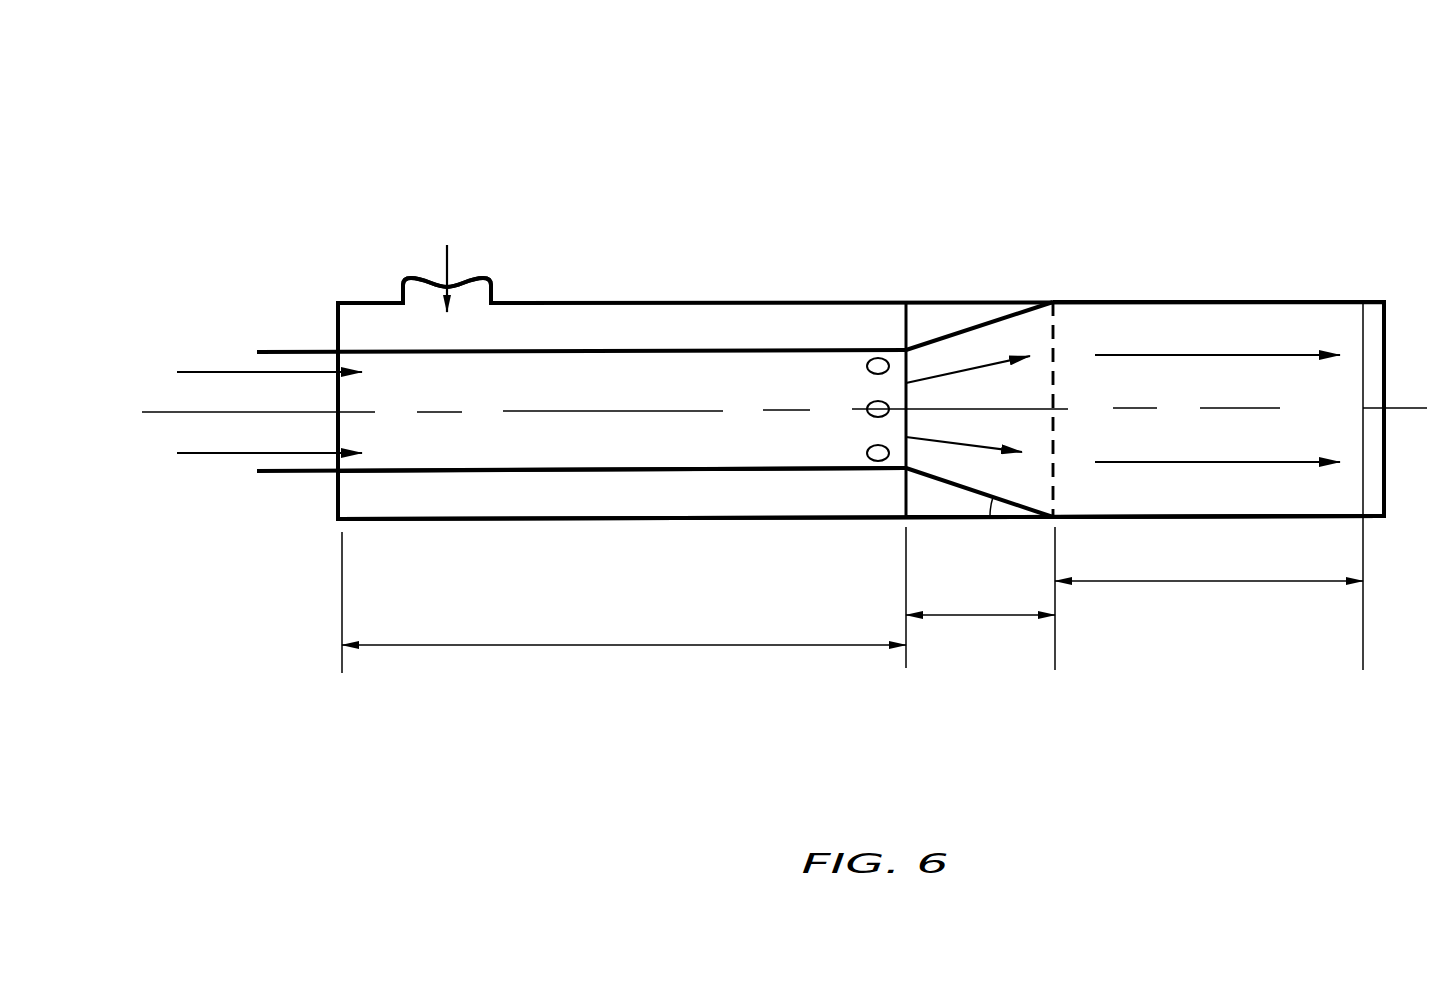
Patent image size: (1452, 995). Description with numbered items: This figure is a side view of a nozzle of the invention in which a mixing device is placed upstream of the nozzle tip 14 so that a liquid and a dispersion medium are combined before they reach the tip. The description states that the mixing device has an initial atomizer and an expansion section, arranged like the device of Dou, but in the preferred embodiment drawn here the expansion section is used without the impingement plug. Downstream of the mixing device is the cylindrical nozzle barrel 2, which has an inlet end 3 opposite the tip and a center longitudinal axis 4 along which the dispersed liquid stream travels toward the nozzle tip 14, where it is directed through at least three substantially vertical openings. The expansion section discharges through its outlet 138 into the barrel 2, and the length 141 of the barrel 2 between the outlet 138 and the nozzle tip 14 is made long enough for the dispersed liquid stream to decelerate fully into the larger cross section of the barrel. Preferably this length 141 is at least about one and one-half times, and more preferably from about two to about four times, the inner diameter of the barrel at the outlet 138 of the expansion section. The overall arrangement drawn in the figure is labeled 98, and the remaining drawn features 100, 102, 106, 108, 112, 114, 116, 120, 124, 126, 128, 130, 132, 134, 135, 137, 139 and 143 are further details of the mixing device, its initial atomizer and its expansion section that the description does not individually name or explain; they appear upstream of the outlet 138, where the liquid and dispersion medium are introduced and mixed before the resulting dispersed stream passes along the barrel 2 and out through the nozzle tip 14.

The fuel injection system 98 is at (763, 93).
The premixing duct length 100 is at (665, 645).
The fuel inlet 102 is at (408, 280).
The inner wall 106 is at (638, 350).
The outer wall 108 is at (545, 302).
The fuel injection holes 112 is at (865, 368).
The diverging section length 114 is at (977, 617).
The mixed flow 116 is at (1157, 463).
The air flow 120 is at (185, 389).
The diverging upper vane 124 is at (908, 370).
The fuel flow 126 is at (447, 260).
The air flow 128 is at (225, 455).
The centerline axis 130 is at (450, 412).
The annular passage 132 is at (517, 483).
The trailing edge plane 134 is at (847, 350).
The inner passage wall 135 is at (625, 473).
The outer casing wall 137 is at (738, 522).
The outlet of the expansion section 138 is at (1055, 343).
The bottom wall 139 is at (1006, 520).
The length of the nozzle barrel 141 is at (1232, 582).
The diverging lower vane 143 is at (932, 480).
The barrel 2 is at (1277, 297).
The inlet end 3 is at (1058, 472).
The center longitudinal axis 4 is at (1210, 408).
The nozzle tip 14 is at (1370, 310).